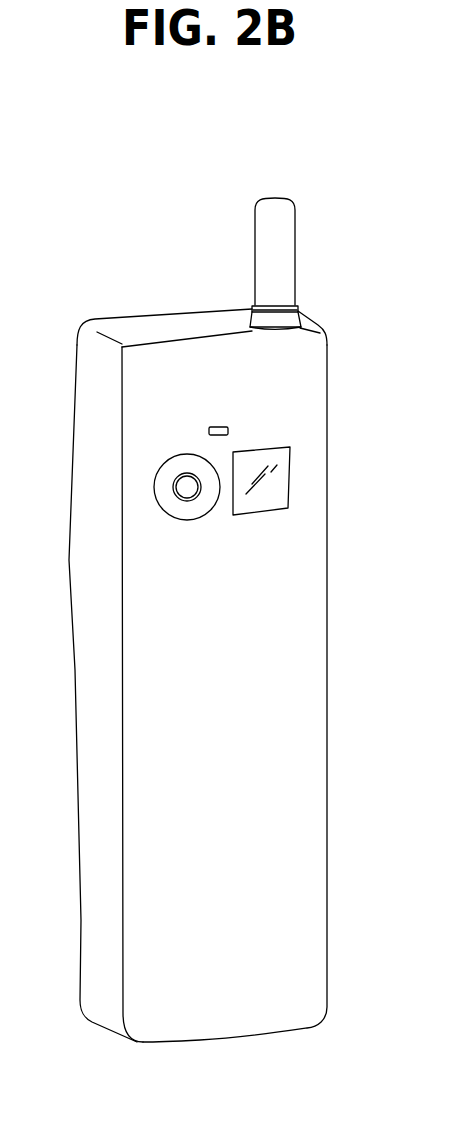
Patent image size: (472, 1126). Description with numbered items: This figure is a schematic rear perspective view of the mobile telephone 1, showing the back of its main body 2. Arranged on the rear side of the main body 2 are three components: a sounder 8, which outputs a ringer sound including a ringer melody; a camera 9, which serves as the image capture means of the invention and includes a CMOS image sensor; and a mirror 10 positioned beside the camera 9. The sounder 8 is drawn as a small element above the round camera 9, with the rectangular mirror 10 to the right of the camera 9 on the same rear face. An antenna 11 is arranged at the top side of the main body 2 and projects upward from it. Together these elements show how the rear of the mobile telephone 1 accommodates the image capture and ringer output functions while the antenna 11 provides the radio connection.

The mobile telephone 1 is at (152, 188).
The main body 2 is at (90, 412).
The sounder 8 is at (208, 430).
The camera 9 is at (153, 495).
The mirror 10 is at (290, 493).
The antenna 11 is at (255, 240).